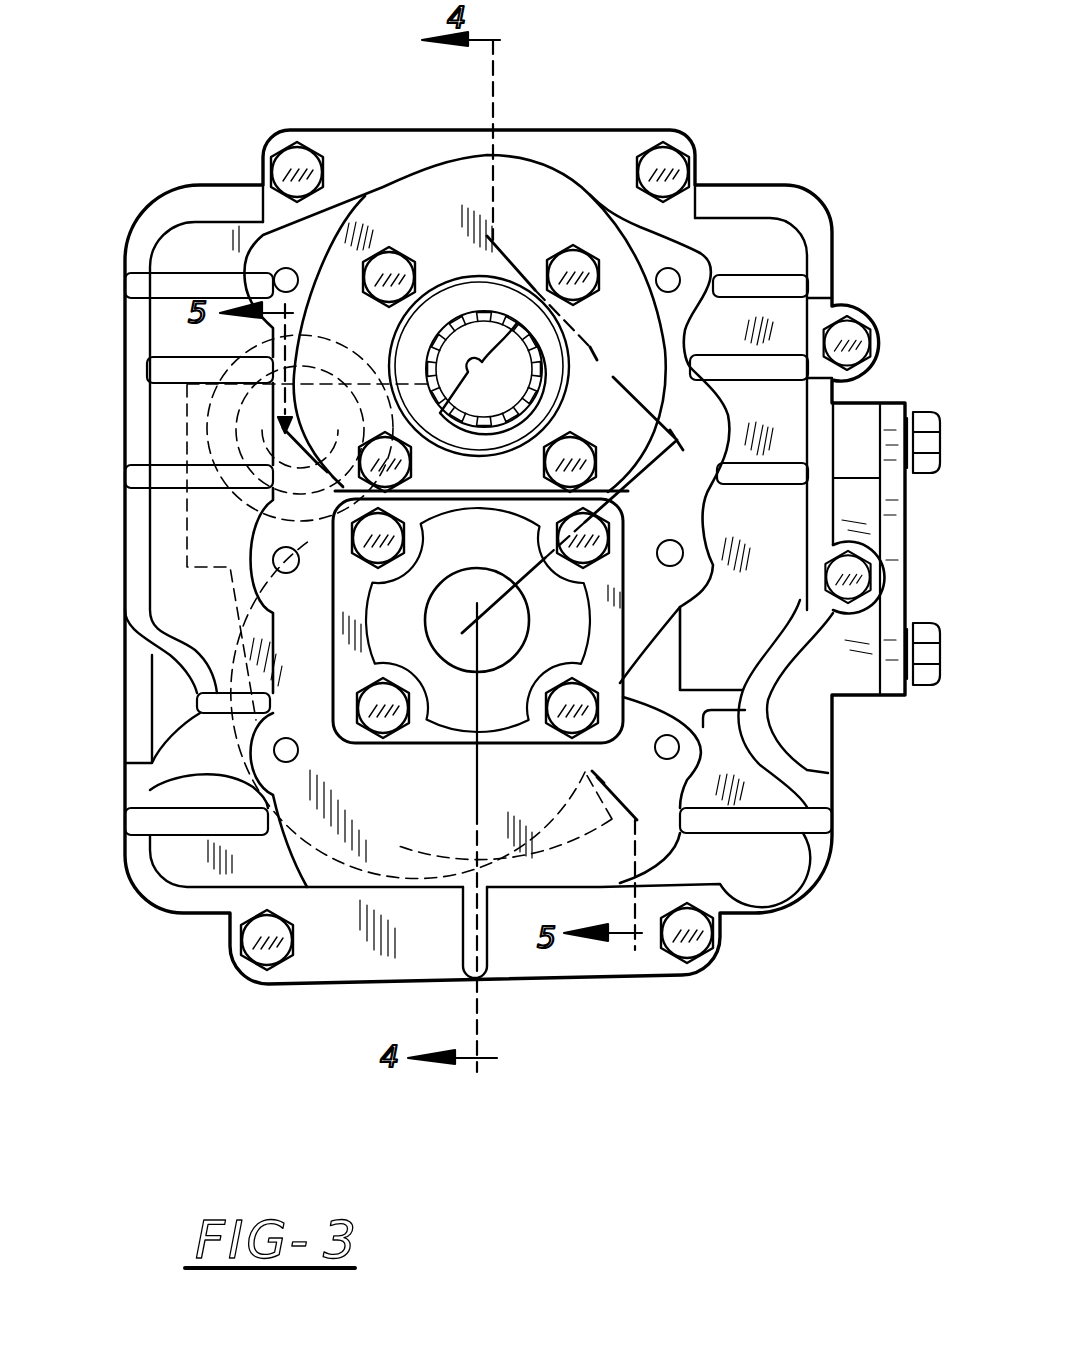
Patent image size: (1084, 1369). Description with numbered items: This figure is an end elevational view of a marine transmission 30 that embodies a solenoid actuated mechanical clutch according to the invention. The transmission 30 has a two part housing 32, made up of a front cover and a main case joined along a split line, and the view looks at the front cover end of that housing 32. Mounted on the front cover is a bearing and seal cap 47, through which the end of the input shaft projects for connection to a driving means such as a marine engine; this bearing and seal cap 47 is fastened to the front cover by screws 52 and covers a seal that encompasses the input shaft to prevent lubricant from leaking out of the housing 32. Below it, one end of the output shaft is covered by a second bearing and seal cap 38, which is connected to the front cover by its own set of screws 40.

The transmission 30 is at (574, 130).
The housing 32 is at (697, 250).
The bearing and seal cap 38 is at (683, 616).
The screws 40 is at (602, 538).
The bearing and seal cap 47 is at (443, 207).
The screws 52 is at (380, 262).